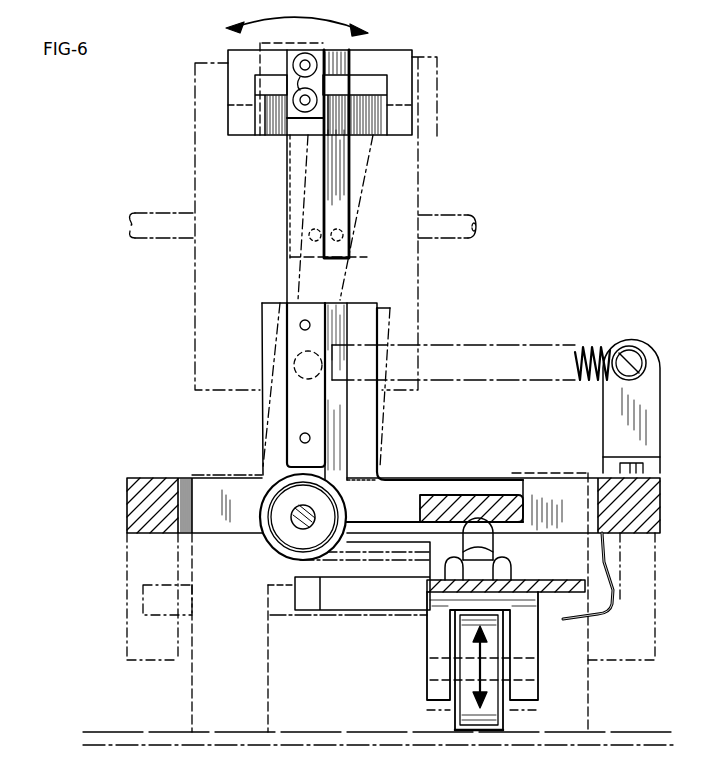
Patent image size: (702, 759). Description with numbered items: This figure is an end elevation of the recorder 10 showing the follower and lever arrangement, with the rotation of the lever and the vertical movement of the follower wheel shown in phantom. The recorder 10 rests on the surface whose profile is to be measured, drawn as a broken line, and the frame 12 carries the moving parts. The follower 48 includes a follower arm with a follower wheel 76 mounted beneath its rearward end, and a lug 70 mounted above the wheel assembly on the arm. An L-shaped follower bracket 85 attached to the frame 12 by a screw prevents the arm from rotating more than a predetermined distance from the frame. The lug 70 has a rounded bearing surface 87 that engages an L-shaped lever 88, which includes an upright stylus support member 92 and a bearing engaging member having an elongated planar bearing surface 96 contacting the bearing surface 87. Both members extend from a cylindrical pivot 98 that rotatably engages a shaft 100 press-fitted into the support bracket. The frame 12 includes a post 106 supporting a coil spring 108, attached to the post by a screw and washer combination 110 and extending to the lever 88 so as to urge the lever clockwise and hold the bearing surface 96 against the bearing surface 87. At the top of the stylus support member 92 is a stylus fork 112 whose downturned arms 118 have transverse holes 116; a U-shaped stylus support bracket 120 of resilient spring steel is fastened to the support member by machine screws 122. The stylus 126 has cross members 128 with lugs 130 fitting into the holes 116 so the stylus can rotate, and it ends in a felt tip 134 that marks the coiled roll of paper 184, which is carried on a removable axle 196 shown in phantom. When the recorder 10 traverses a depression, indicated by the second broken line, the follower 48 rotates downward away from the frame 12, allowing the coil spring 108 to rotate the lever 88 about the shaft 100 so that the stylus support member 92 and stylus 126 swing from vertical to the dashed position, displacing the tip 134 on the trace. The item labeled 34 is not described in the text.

The recorder 10 is at (178, 423).
The frame 12 is at (128, 516).
The support frame 34 is at (245, 707).
The follower 48 is at (427, 651).
The lug 70 is at (494, 548).
The follower wheel 76 is at (530, 670).
The L-shaped follower bracket 85 is at (616, 592).
The rounded bearing surface 87 is at (508, 522).
The L-shaped lever 88 is at (368, 445).
The stylus support member 92 is at (296, 170).
The bearing surface 96 is at (474, 497).
The cylindrical pivot 98 is at (276, 422).
The shaft 100 is at (293, 525).
The post 106 is at (610, 399).
The coil spring 108 is at (483, 349).
The screw and washer combination 110 is at (641, 350).
The stylus fork 112 is at (322, 90).
The transverse holes 116 is at (258, 128).
The downturned arms 118 is at (237, 78).
The U-shaped stylus support bracket 120 is at (318, 78).
The machine screws 122 is at (309, 48).
The stylus 126 is at (350, 200).
The cross members 128 is at (294, 172).
The lugs 130 is at (232, 108).
The tip 134 is at (350, 233).
The coiled roll of paper 184 is at (398, 268).
The axle 196 is at (458, 214).